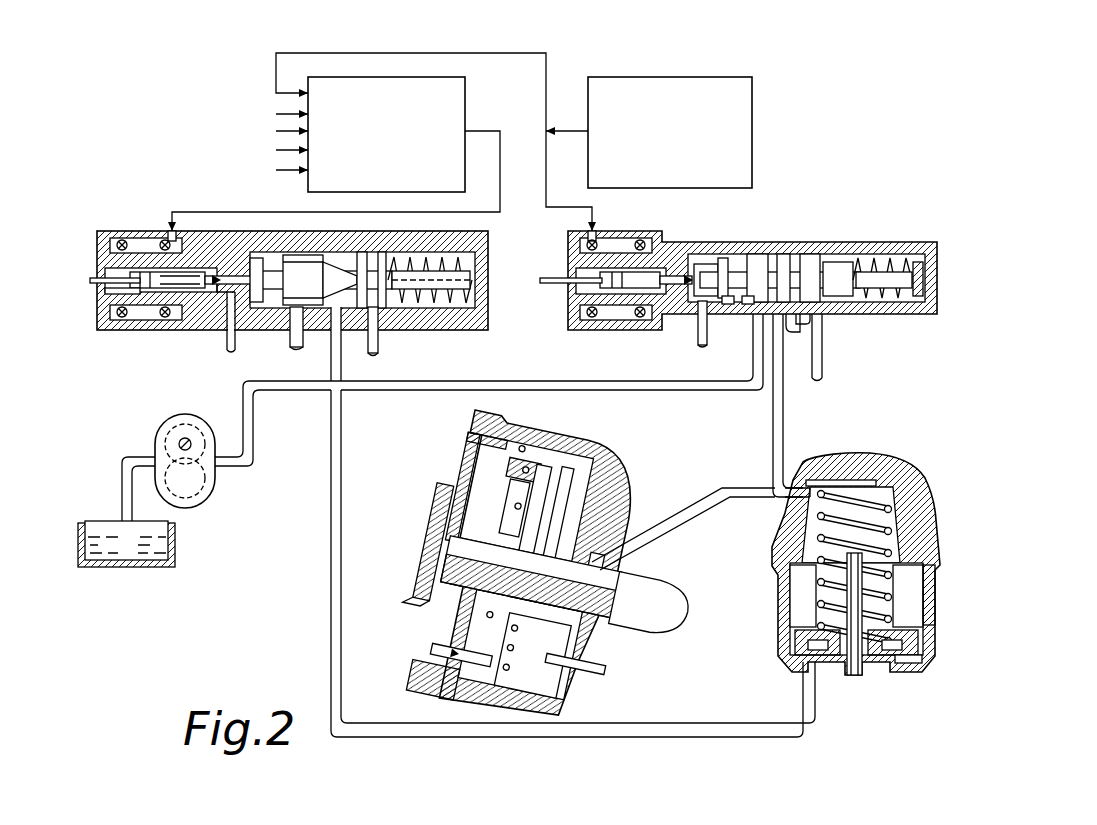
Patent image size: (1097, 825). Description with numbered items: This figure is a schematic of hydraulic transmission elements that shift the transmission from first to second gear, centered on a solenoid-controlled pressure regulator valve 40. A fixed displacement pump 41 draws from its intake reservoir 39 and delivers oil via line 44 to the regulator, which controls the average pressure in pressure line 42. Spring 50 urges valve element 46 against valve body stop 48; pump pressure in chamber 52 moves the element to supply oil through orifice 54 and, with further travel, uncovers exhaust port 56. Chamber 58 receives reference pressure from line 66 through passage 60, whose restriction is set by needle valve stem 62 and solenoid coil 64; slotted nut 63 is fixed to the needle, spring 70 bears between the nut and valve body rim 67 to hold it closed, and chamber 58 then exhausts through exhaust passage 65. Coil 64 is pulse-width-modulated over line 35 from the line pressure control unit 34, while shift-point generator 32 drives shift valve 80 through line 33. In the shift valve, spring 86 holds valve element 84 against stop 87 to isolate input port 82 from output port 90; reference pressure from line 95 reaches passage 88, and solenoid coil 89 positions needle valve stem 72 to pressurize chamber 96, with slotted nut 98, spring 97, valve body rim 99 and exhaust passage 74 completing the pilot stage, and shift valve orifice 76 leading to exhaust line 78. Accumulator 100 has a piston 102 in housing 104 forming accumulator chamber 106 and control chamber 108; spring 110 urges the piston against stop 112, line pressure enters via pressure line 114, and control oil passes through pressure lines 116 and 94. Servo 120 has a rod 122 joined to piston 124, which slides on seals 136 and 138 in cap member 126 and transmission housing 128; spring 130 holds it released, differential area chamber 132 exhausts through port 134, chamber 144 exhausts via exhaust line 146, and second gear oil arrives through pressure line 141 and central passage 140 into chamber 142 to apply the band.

The shift-point generator 32 is at (748, 102).
The line 33 is at (546, 172).
The line pressure control unit 34 is at (453, 102).
The line 35 is at (500, 212).
The intake reservoir 39 is at (104, 526).
The pressure regulator valve 40 is at (163, 170).
The pump 41 is at (216, 486).
The pressure line 42 is at (341, 372).
The line 44 is at (305, 388).
The valve element 46 is at (285, 305).
The valve body stop 48 is at (314, 279).
The spring 50 is at (445, 296).
The chamber 52 is at (332, 302).
The orifice 54 is at (378, 350).
The exhaust port 56 is at (298, 345).
The chamber 58 is at (254, 292).
The passage 60 is at (212, 300).
The needle valve stem 62 is at (191, 258).
The slotted nut 63 is at (185, 300).
The solenoid coil 64 is at (142, 318).
The exhaust passage 65 is at (100, 283).
The valve body rim 67 is at (108, 296).
The line 66 is at (230, 340).
The spring 70 is at (143, 240).
The needle valve stem 72 is at (668, 286).
The exhaust passage 74 is at (575, 282).
The shift valve orifice 76 is at (810, 294).
The exhaust line 78 is at (824, 356).
The shift valve 80 is at (927, 194).
The input port 82 is at (746, 304).
The valve element 84 is at (768, 280).
The spring 86 is at (876, 258).
The stop 87 is at (715, 296).
The passage 88 is at (692, 304).
The solenoid coil 89 is at (614, 310).
The output port 90 is at (793, 320).
The pressure line 94 is at (785, 415).
The line 95 is at (702, 342).
The chamber 96 is at (726, 312).
The spring 97 is at (641, 306).
The slotted nut 98 is at (648, 300).
The valve body rim 99 is at (616, 270).
The accumulator 100 is at (924, 430).
The piston 102 is at (915, 664).
The housing 104 is at (934, 582).
The accumulator chamber 106 is at (828, 662).
The control chamber 108 is at (925, 556).
The spring 110 is at (888, 500).
The stop 112 is at (866, 672).
The pressure line 114 is at (710, 728).
The pressure line 116 is at (796, 486).
The servo 120 is at (559, 565).
The rod 122 is at (632, 612).
The piston 124 is at (465, 590).
The cap member 126 is at (470, 478).
The transmission housing 128 is at (585, 458).
The spring 130 is at (558, 510).
The differential area chamber 132 is at (432, 660).
The port 134 is at (418, 692).
The seal 136 is at (520, 446).
The seal 138 is at (562, 447).
The central passage 140 is at (608, 560).
The pressure line 141 is at (690, 512).
The chamber 142 is at (452, 517).
The chamber 144 is at (548, 692).
The exhaust line 146 is at (604, 684).